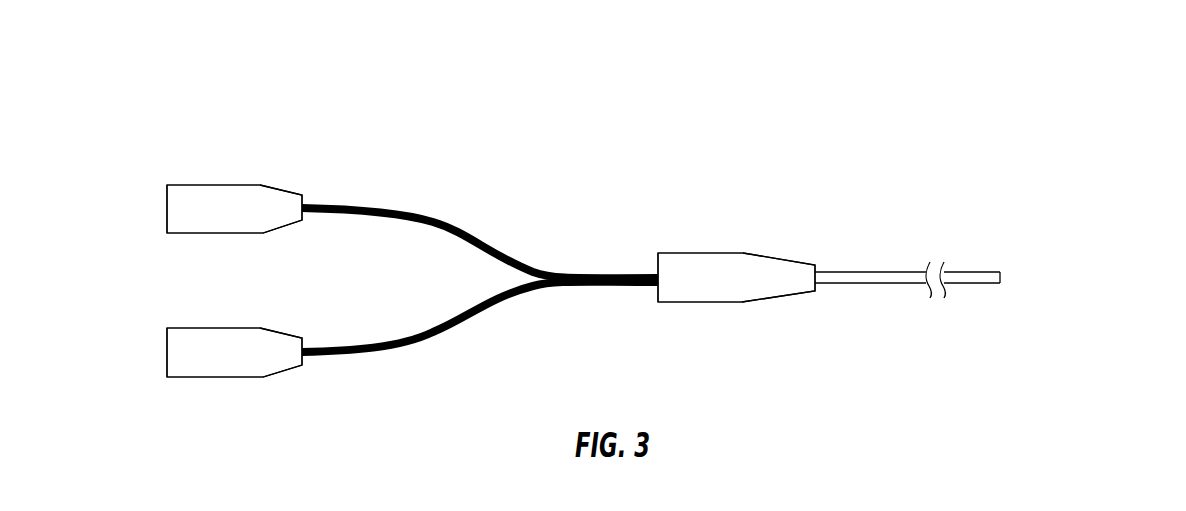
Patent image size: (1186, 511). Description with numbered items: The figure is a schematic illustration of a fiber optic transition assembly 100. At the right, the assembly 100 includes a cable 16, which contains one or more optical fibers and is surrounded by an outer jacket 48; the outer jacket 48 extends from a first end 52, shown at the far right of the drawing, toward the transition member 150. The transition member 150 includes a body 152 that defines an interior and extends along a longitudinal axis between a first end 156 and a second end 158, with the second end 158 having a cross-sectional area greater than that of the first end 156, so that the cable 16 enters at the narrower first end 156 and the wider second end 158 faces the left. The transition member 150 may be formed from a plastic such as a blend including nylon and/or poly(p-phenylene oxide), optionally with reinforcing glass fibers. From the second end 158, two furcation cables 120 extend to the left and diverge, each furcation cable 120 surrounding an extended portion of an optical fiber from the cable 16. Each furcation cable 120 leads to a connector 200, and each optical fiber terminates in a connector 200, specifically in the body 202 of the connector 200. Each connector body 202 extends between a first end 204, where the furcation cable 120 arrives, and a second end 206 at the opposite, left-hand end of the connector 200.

The fiber optic transition assembly 100 is at (795, 115).
The connector 200 is at (201, 175).
The body 202 is at (225, 222).
The first end 204 is at (301, 220).
The second end 206 is at (167, 224).
The furcation cable 120 is at (423, 208).
The transition member 150 is at (733, 236).
The body 152 is at (727, 292).
The first end 156 is at (817, 292).
The second end 158 is at (658, 300).
The cable 16 is at (874, 256).
The outer jacket 48 is at (877, 284).
The first end 52 is at (1008, 270).